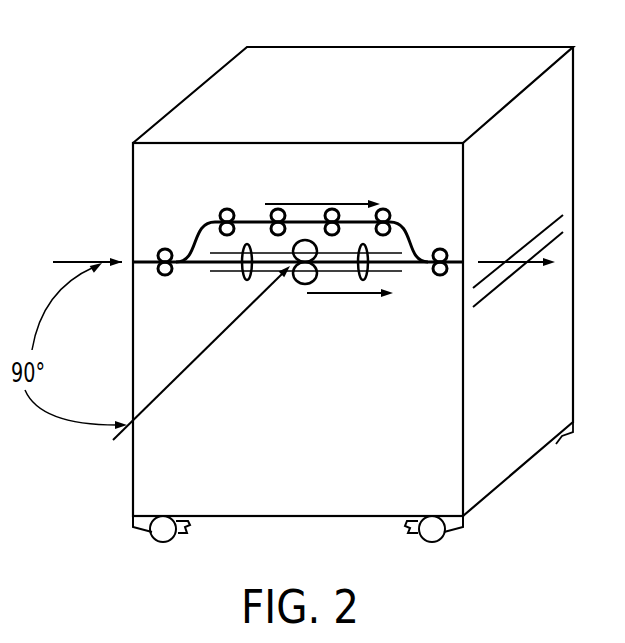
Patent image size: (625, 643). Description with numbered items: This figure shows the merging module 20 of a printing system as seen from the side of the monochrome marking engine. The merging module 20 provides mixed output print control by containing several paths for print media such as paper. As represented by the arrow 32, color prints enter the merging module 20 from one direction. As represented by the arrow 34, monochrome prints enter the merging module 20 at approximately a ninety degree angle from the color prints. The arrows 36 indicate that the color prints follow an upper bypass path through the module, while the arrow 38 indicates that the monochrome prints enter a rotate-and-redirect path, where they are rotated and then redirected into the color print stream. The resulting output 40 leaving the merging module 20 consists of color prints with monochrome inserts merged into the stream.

The merging module 20 is at (145, 88).
The arrow 32 is at (82, 260).
The arrow 34 is at (250, 303).
The arrows 36 is at (310, 203).
The arrow 38 is at (328, 294).
The output 40 is at (490, 258).